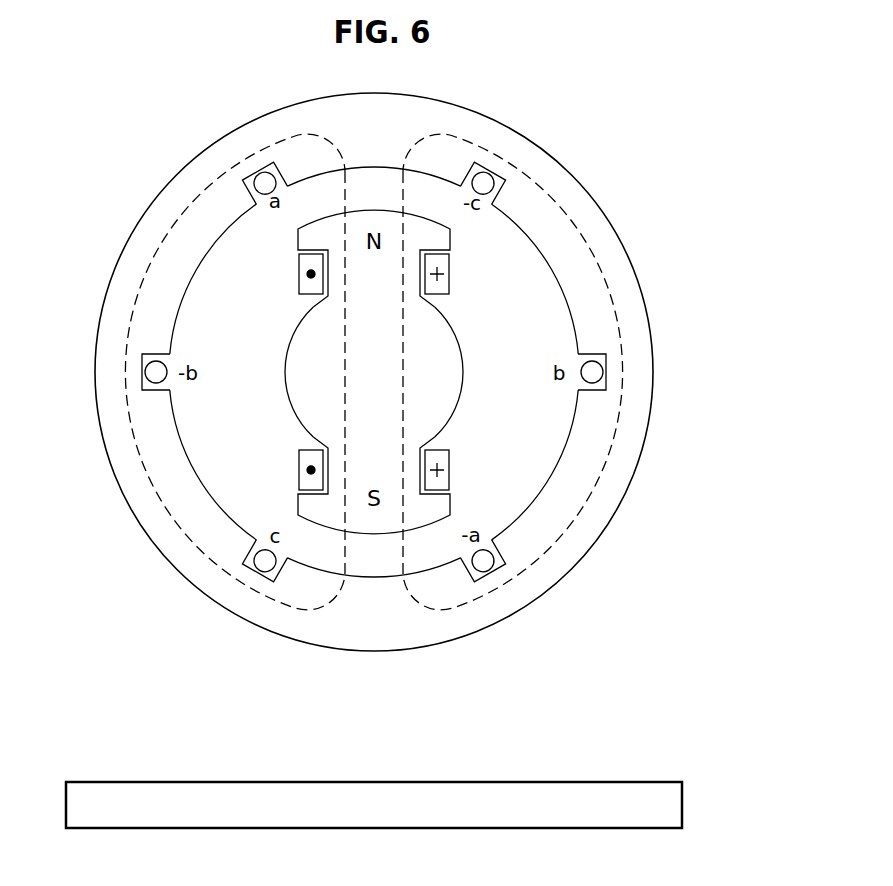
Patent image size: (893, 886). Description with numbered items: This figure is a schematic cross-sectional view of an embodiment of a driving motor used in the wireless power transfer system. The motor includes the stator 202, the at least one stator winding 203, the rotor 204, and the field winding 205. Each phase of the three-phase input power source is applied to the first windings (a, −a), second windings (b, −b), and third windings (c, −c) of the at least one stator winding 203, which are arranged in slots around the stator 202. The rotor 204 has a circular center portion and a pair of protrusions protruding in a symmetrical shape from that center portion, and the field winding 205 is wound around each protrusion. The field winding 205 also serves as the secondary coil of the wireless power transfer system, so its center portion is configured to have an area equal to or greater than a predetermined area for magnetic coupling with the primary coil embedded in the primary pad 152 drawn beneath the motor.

The stator 202 is at (645, 305).
The stator winding 203 is at (603, 372).
The rotor 204 is at (462, 369).
The field winding 205 is at (451, 271).
The primary pad 152 is at (683, 800).